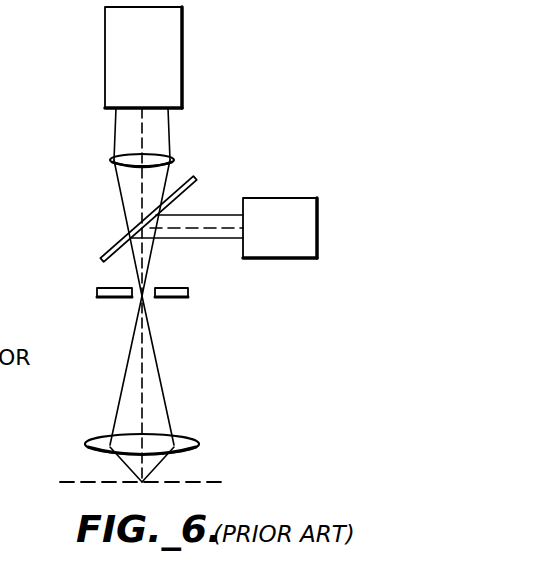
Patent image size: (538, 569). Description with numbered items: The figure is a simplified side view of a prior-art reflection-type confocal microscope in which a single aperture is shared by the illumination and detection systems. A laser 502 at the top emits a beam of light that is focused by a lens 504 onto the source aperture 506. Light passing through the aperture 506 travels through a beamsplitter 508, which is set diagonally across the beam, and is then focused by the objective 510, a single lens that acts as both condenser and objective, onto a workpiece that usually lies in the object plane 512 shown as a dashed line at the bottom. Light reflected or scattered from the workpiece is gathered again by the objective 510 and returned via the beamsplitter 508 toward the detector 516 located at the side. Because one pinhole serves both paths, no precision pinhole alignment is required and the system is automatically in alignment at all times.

The laser 502 is at (105, 52).
The lens 504 is at (110, 158).
The source aperture 506 is at (168, 288).
The beamsplitter 508 is at (192, 181).
The objective lens 510 is at (90, 440).
The object plane 512 is at (65, 482).
The detector 516 is at (318, 222).